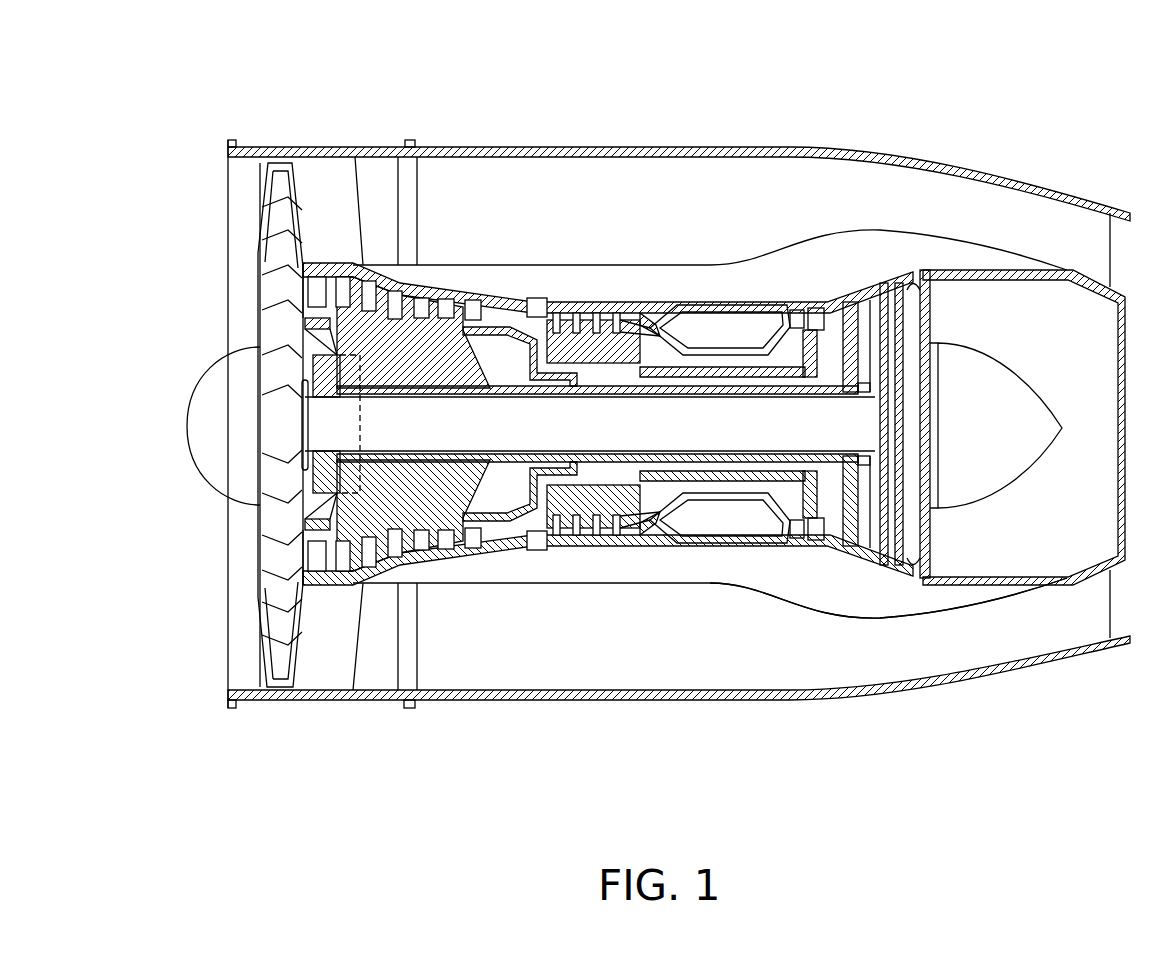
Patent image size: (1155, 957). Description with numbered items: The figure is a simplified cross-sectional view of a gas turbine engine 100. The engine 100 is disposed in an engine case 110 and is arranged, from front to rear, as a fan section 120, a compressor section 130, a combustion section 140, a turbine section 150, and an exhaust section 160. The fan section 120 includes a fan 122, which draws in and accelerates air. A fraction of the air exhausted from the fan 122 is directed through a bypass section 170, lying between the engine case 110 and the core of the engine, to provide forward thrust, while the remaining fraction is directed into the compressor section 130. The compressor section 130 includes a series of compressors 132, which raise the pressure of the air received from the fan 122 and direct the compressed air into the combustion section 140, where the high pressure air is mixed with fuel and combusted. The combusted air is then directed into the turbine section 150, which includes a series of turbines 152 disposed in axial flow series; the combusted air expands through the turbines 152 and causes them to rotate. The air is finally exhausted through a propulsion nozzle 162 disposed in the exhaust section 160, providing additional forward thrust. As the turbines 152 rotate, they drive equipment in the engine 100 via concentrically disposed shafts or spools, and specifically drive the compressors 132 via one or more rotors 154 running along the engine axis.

The gas turbine engine 100 is at (937, 110).
The engine case 110 is at (485, 150).
The fan section 120 is at (313, 740).
The fan 122 is at (268, 262).
The compressor section 130 is at (585, 740).
The compressors 132 is at (436, 374).
The combustion section 140 is at (755, 740).
The turbine section 150 is at (930, 740).
The turbines 152 is at (935, 588).
The rotors 154 is at (512, 403).
The exhaust section 160 is at (1070, 740).
The propulsion nozzle 162 is at (1033, 215).
The bypass section 170 is at (622, 192).